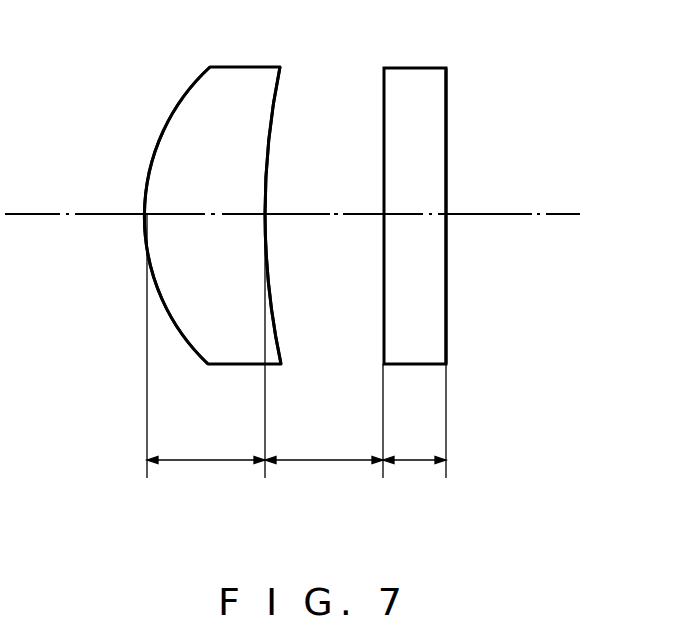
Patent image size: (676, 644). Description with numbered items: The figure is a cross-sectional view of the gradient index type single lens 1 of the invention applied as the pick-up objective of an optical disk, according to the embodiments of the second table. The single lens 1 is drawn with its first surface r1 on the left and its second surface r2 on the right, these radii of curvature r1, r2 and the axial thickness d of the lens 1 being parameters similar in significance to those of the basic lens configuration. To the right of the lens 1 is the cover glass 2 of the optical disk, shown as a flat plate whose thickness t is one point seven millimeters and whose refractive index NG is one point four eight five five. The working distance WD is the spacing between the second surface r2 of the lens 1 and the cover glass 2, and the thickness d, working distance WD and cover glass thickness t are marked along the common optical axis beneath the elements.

The gradient index type single lens 1 is at (238, 93).
The cover glass 2 is at (419, 87).
The radius of curvature of the first lens surface r1 is at (176, 104).
The radius of curvature of the second lens surface r2 is at (278, 89).
The refractive index of the cover glass NG is at (434, 138).
The lens thickness d is at (206, 475).
The working distance WD is at (324, 475).
The thickness of the cover glass t is at (414, 475).